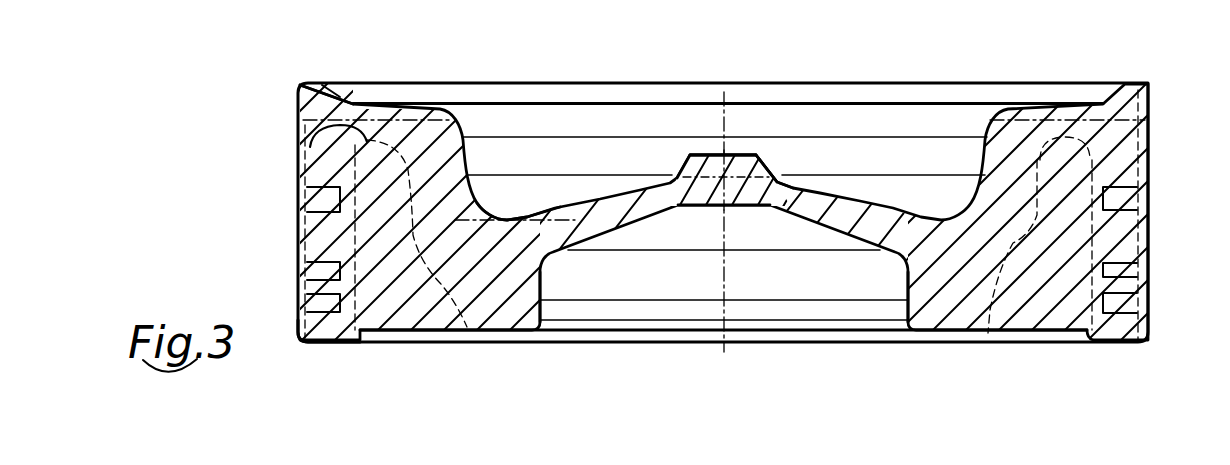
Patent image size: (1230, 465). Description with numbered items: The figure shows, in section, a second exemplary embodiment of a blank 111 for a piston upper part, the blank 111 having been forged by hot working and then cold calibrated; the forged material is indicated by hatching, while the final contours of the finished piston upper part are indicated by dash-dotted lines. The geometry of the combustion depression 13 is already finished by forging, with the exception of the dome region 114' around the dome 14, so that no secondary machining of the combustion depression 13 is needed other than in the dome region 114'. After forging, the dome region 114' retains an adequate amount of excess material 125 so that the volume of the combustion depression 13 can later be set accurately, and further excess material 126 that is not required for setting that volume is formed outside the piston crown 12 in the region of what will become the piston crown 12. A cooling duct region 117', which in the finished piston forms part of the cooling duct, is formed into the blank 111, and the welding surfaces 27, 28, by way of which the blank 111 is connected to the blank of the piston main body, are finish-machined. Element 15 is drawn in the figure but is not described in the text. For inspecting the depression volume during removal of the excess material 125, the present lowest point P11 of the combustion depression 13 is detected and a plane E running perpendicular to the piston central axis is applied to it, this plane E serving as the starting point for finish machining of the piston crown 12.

The blank 111 is at (1136, 64).
The further excess material 126 is at (318, 69).
The first side wall 15 is at (376, 109).
The piston crown 12 is at (1031, 110).
The combustion depression 13 is at (913, 160).
The excess material 125 is at (674, 160).
The dome region 114' is at (744, 89).
The dome 14 is at (760, 168).
The lowest point P11 is at (508, 218).
The cooling duct region 117' is at (697, 281).
The welding surface 28 is at (503, 331).
The welding surface 27 is at (323, 343).
The plane E is at (530, 222).